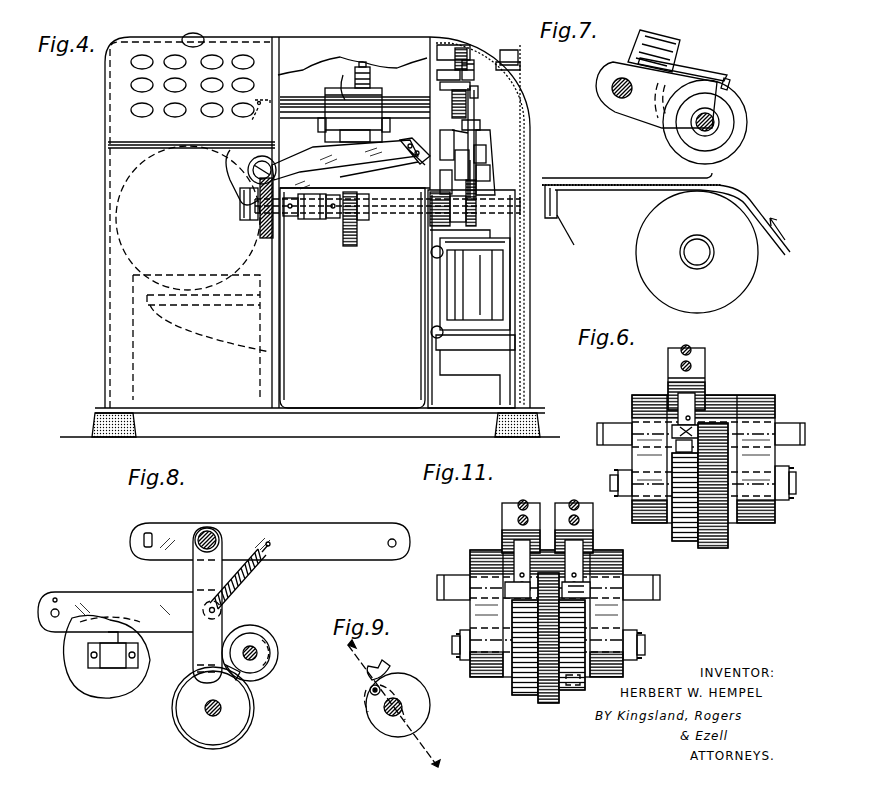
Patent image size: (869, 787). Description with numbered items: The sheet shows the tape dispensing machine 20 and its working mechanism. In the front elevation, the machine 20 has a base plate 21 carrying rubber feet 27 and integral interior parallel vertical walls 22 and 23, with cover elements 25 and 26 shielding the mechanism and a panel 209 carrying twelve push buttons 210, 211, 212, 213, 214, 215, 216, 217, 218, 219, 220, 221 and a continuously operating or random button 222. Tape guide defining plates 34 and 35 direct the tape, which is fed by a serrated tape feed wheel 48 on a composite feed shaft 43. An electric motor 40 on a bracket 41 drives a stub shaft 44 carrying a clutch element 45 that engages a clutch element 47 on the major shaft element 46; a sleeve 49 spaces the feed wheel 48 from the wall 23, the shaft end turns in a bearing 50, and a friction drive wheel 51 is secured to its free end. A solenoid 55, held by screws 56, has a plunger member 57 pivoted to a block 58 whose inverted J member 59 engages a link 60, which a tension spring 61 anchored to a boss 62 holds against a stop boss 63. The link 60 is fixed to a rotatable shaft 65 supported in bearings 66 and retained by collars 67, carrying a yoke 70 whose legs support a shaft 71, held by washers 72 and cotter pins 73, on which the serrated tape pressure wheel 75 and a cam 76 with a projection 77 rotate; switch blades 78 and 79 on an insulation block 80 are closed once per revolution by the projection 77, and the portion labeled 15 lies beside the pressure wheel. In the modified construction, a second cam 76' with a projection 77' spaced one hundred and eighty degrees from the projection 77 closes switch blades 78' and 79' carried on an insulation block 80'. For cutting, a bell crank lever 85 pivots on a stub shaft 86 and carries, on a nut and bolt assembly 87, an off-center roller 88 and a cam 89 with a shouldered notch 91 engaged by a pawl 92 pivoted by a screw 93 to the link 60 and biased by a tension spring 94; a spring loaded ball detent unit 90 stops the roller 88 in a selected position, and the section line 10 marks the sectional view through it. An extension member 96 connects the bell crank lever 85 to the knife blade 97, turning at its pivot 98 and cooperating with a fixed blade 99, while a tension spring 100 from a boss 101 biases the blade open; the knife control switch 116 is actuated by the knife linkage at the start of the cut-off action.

In FIG. 9, the section line 10 is at (385, 703).
In FIG. 7, the gear 15 is at (748, 108).
In FIG. 6, the gear 15 is at (720, 548).
In FIG. 4, the machine 20 is at (90, 268).
In FIG. 4, the base plate 21 is at (182, 405).
In FIG. 4, the interior vertical wall 22 is at (278, 372).
In FIG. 4, the interior vertical wall 23 is at (425, 355).
In FIG. 8, the interior vertical wall 23 is at (70, 688).
In FIG. 4, the cover element 25 is at (375, 50).
In FIG. 4, the cover element 26 is at (528, 130).
In FIG. 4, the rubber feet 27 is at (94, 420).
In FIG. 7, the tape guide defining plate 34 is at (624, 180).
In FIG. 7, the tape guide defining plate 35 is at (604, 196).
In FIG. 4, the electric motor 40 is at (118, 240).
In FIG. 4, the bracket 41 is at (185, 310).
In FIG. 4, the composite feed shaft 43 is at (370, 222).
In FIG. 4, the stub shaft 44 is at (264, 240).
In FIG. 4, the clutch element 45 is at (292, 220).
In FIG. 4, the major shaft element 46 is at (326, 220).
In FIG. 8, the major shaft element 46 is at (204, 718).
In FIG. 4, the clutch element 47 is at (320, 222).
In FIG. 4, the tape feed wheel 48 is at (350, 248).
In FIG. 7, the tape feed wheel 48 is at (725, 298).
In FIG. 4, the sleeve 49 is at (396, 220).
In FIG. 4, the bearing 50 is at (430, 226).
In FIG. 4, the friction drive wheel 51 is at (478, 222).
In FIG. 8, the friction drive wheel 51 is at (250, 728).
In FIG. 4, the solenoid 55 is at (490, 292).
In FIG. 4, the screws 56 is at (432, 255).
In FIG. 4, the plunger member 57 is at (480, 234).
In FIG. 4, the block 58 is at (488, 158).
In FIG. 4, the inverted J member 59 is at (505, 105).
In FIG. 4, the link 60 is at (505, 90).
In FIG. 8, the link 60 is at (318, 525).
In FIG. 4, the tension spring 61 is at (490, 75).
In FIG. 4, the boss 62 is at (448, 110).
In FIG. 4, the stop boss 63 is at (440, 75).
In FIG. 4, the rotatable shaft 65 is at (290, 95).
In FIG. 7, the rotatable shaft 65 is at (612, 82).
In FIG. 6, the rotatable shaft 65 is at (604, 423).
In FIG. 11, the rotatable shaft 65 is at (452, 578).
In FIG. 4, the bearings 66 is at (275, 60).
In FIG. 4, the collars 67 is at (255, 120).
In FIG. 4, the yoke 70 is at (350, 80).
In FIG. 7, the yoke 70 is at (622, 123).
In FIG. 6, the yoke 70 is at (752, 398).
In FIG. 11, the yoke 70 is at (476, 552).
In FIG. 4, the shaft 71 is at (316, 126).
In FIG. 7, the shaft 71 is at (720, 125).
In FIG. 6, the shaft 71 is at (610, 478).
In FIG. 11, the shaft 71 is at (646, 644).
In FIG. 6, the washers 72 is at (782, 466).
In FIG. 11, the washers 72 is at (462, 660).
In FIG. 6, the cotter pins 73 is at (615, 472).
In FIG. 11, the cotter pins 73 is at (458, 658).
In FIG. 4, the tape pressure wheel 75 is at (352, 138).
In FIG. 11, the tape pressure wheel 75 is at (540, 705).
In FIG. 7, the cam 76 is at (731, 124).
In FIG. 6, the cam 76 is at (685, 513).
In FIG. 11, the cam 76 is at (508, 655).
In FIG. 11, the second cam 76' is at (577, 676).
In FIG. 7, the peripheral projection 77 is at (753, 79).
In FIG. 6, the peripheral projection 77 is at (666, 495).
In FIG. 11, the peripheral projection 77 is at (498, 558).
In FIG. 11, the peripheral projection 77' is at (570, 705).
In FIG. 7, the switch blade 78 is at (695, 58).
In FIG. 6, the switch blade 78 is at (705, 395).
In FIG. 11, the switch blade 78 is at (530, 533).
In FIG. 11, the switch blade 78' is at (593, 561).
In FIG. 7, the switch blade 79 is at (650, 100).
In FIG. 6, the switch blade 79 is at (654, 407).
In FIG. 11, the switch blade 79' is at (625, 601).
In FIG. 4, the laminated insulation block 80 is at (351, 56).
In FIG. 7, the laminated insulation block 80 is at (678, 48).
In FIG. 6, the laminated insulation block 80 is at (706, 374).
In FIG. 11, the laminated insulation block 80 is at (505, 523).
In FIG. 11, the laminated insulation block 80' is at (574, 514).
In FIG. 4, the bell crank lever 85 is at (486, 170).
In FIG. 8, the bell crank lever 85 is at (108, 603).
In FIG. 9, the bell crank lever 85 is at (366, 700).
In FIG. 4, the stub shaft 86 is at (468, 150).
In FIG. 8, the stub shaft 86 is at (222, 610).
In FIG. 8, the nut and bolt assembly 87 is at (258, 646).
In FIG. 8, the roller 88 is at (278, 637).
In FIG. 9, the roller 88 is at (382, 730).
In FIG. 8, the cam 89 is at (272, 652).
In FIG. 9, the spring loaded ball detent unit 90 is at (378, 685).
In FIG. 8, the shouldered notch 91 is at (236, 680).
In FIG. 4, the pawl 92 is at (500, 140).
In FIG. 8, the pawl 92 is at (195, 575).
In FIG. 4, the screw 93 is at (478, 96).
In FIG. 8, the screw 93 is at (210, 528).
In FIG. 8, the tension spring 94 is at (265, 592).
In FIG. 4, the extension member 96 is at (420, 163).
In FIG. 4, the knife blade 97 is at (412, 133).
In FIG. 4, the pivot 98 is at (240, 178).
In FIG. 4, the fixed blade 99 is at (380, 162).
In FIG. 7, the fixed blade 99 is at (573, 236).
In FIG. 4, the tension spring 100 is at (476, 130).
In FIG. 4, the boss 101 is at (472, 88).
In FIG. 8, the tape cut-off knife control switch 116 is at (112, 668).
In FIG. 4, the panel 209 is at (150, 148).
In FIG. 4, the push button 210 is at (142, 55).
In FIG. 4, the push button 211 is at (175, 55).
In FIG. 4, the push button 212 is at (228, 55).
In FIG. 4, the push button 213 is at (243, 55).
In FIG. 4, the push button 214 is at (131, 90).
In FIG. 4, the push button 215 is at (172, 92).
In FIG. 4, the push button 216 is at (210, 90).
In FIG. 4, the push button 217 is at (245, 78).
In FIG. 4, the push button 218 is at (135, 113).
In FIG. 4, the push button 219 is at (170, 115).
In FIG. 4, the push button 220 is at (212, 116).
In FIG. 4, the push button 221 is at (240, 115).
In FIG. 4, the continuously operating or random button 222 is at (208, 20).